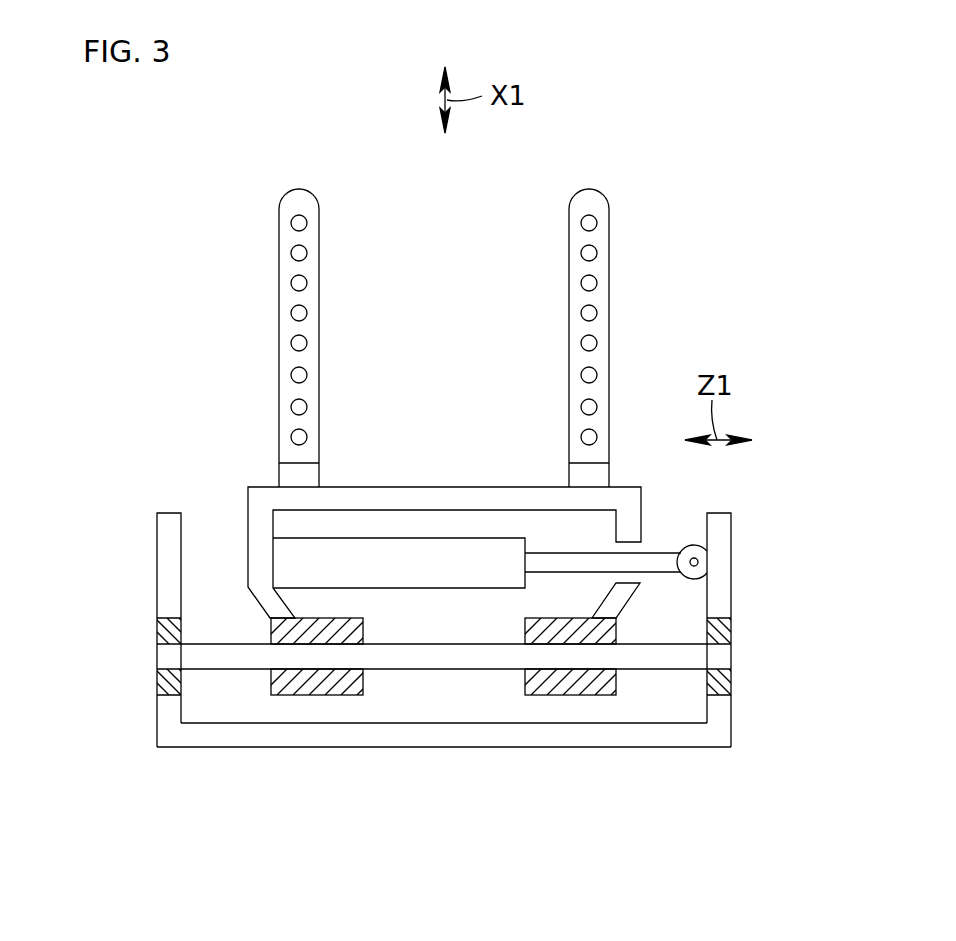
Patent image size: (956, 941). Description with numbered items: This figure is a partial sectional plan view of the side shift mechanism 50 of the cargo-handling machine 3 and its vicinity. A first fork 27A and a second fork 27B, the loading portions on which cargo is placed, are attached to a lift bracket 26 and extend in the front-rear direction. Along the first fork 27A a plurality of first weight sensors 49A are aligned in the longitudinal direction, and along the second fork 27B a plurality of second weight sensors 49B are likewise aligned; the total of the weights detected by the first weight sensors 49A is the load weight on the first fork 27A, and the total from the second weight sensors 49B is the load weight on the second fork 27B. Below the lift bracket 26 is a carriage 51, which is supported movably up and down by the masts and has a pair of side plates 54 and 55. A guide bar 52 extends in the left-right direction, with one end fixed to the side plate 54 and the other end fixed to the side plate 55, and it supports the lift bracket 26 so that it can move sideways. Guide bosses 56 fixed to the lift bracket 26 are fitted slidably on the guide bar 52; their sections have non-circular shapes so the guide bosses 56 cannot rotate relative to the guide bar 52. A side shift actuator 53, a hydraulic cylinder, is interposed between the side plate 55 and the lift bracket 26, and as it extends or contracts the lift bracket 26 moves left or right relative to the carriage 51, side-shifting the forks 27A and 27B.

The cargo-handling machine 3 is at (633, 248).
The lift bracket 26 is at (440, 486).
The first fork 27A is at (294, 338).
The second fork 27B is at (590, 338).
The first weight sensors 49A is at (299, 343).
The second weight sensors 49B is at (589, 343).
The side shift mechanism 50 is at (444, 706).
The carriage 51 is at (443, 747).
The guide bar 52 is at (398, 658).
The side shift actuator 53 is at (473, 570).
The side plate 54 is at (170, 550).
The side plate 55 is at (720, 550).
The guide bosses 56 is at (304, 682).